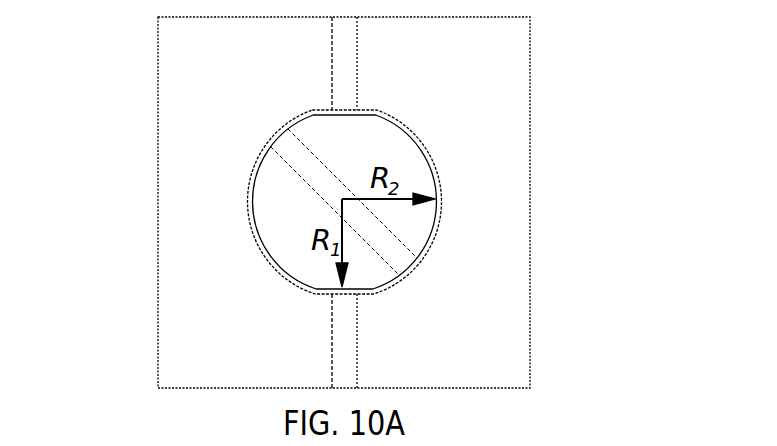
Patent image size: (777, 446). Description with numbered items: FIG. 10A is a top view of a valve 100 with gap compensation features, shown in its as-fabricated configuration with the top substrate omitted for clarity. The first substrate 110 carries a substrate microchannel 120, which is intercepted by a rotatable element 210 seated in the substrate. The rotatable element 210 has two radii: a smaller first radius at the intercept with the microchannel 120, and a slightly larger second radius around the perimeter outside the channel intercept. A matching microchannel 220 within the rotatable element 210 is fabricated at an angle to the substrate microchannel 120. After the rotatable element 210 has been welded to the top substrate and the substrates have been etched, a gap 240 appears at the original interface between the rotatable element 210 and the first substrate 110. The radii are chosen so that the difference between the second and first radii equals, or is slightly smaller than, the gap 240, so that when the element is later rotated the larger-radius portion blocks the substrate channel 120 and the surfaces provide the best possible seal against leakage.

The valve 100 is at (578, 97).
The first substrate 110 is at (158, 78).
The substrate microchannel 120 is at (330, 333).
The rotatable element 210 is at (271, 209).
The matching microchannel 220 is at (290, 166).
The gap 240 is at (263, 252).